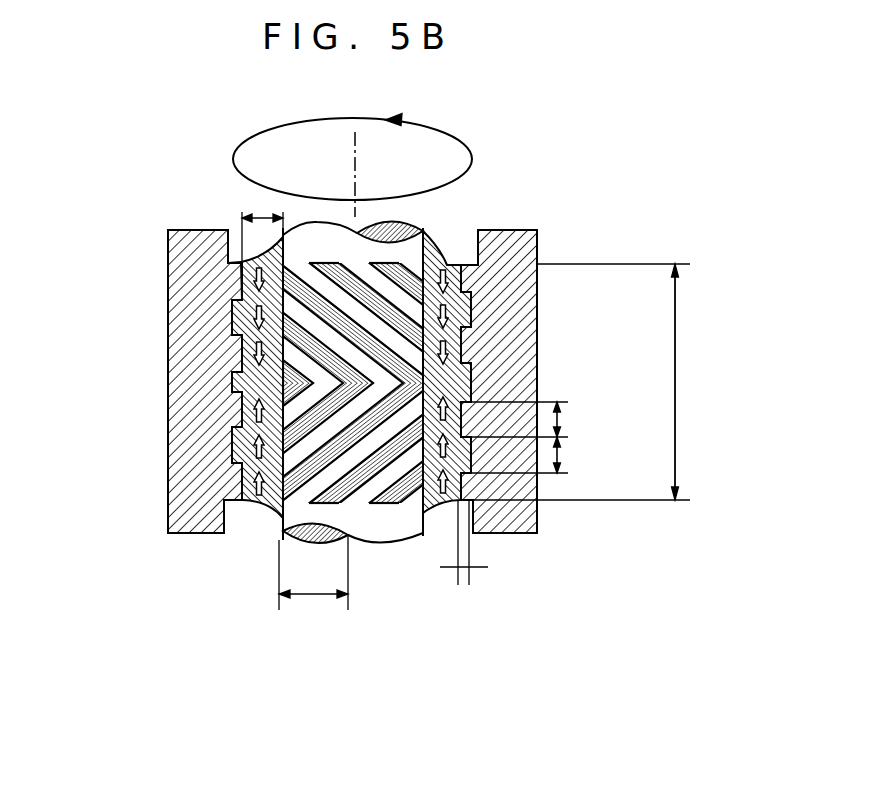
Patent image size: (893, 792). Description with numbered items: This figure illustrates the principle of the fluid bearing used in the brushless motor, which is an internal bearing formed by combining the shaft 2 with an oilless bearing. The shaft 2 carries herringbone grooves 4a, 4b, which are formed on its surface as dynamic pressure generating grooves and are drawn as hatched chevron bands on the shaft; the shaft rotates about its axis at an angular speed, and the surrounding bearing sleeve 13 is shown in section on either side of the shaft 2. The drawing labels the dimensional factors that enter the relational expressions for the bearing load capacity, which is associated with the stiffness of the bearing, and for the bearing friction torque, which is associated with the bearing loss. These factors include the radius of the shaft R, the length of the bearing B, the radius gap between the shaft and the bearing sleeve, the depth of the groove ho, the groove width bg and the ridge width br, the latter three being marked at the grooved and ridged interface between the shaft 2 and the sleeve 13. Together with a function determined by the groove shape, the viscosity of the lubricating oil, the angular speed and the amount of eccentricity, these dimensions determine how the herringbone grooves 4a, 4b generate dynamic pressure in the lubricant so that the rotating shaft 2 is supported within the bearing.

The housing / stator block 13 is at (178, 473).
The shaft 2 is at (279, 526).
The herringbone groove 4a is at (346, 451).
The herringbone groove 4b is at (346, 451).
The radius of the shaft R is at (312, 594).
The length of the bearing B is at (676, 383).
The ridge width br is at (549, 419).
The groove width bg is at (556, 456).
The depth of the groove ho is at (486, 542).